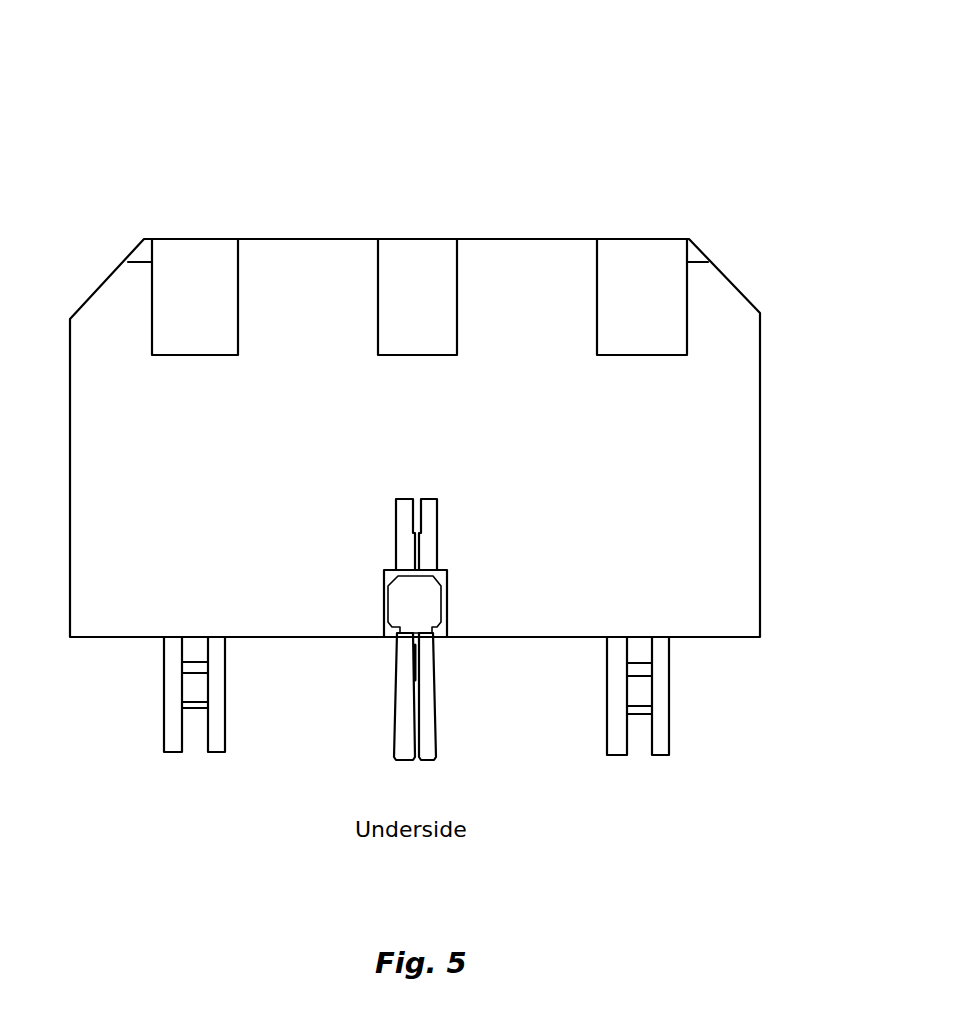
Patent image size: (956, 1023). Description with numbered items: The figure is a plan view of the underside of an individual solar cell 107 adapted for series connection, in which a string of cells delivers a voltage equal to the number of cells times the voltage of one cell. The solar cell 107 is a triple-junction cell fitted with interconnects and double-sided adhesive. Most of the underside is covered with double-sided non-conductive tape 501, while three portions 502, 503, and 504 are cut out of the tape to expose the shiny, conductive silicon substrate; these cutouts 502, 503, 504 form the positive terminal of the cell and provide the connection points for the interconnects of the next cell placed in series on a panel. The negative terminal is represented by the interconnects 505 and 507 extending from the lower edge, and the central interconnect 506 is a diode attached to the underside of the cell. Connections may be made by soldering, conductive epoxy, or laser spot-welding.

The solar cell 107 is at (522, 128).
The double-sided non-conductive tape 501 is at (318, 320).
The cutout 502 is at (182, 308).
The cutout 503 is at (402, 306).
The cutout 504 is at (636, 302).
The interconnect 505 is at (164, 729).
The interconnect 506 is at (384, 603).
The interconnect 507 is at (607, 743).